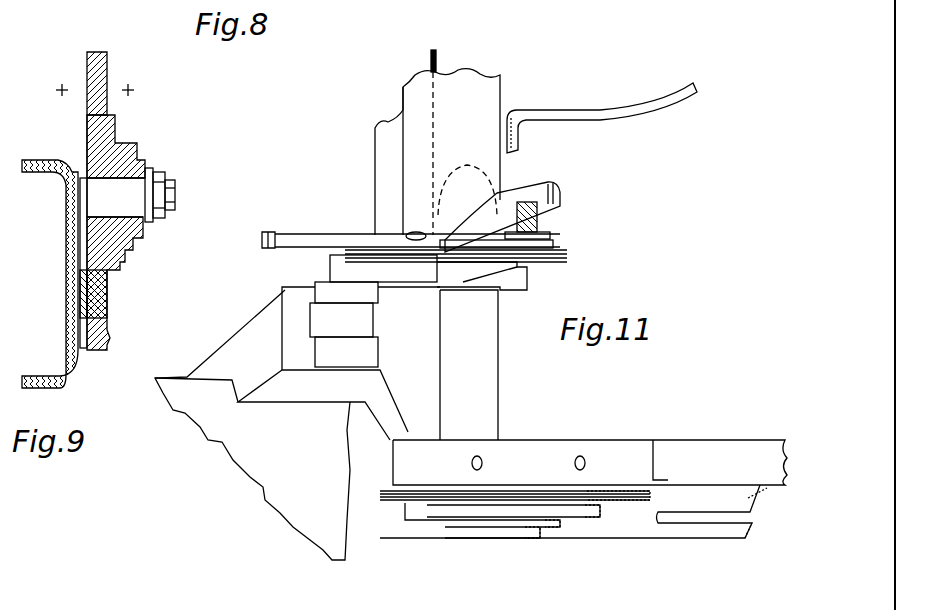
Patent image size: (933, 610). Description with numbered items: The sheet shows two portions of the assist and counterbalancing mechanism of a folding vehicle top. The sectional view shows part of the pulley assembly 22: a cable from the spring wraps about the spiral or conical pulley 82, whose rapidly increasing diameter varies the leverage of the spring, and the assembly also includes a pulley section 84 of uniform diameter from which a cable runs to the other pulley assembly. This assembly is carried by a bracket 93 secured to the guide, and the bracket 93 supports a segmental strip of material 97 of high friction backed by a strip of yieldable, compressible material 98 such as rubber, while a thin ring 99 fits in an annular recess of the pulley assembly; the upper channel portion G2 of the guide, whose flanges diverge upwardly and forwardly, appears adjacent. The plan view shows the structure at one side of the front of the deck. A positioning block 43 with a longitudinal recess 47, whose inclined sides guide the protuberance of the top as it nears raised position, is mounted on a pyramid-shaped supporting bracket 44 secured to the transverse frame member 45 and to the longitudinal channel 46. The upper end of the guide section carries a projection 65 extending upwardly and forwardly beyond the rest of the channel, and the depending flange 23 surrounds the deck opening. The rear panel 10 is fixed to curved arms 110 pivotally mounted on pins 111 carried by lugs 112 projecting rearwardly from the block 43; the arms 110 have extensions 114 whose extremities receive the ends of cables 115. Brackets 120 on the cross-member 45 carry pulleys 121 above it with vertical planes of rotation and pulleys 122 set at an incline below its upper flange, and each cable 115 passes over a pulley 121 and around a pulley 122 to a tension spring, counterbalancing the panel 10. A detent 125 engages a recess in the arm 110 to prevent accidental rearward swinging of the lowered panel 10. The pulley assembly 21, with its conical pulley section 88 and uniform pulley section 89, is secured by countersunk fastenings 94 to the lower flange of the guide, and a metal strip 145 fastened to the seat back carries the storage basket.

In FIG. 9, the rear panel 10 is at (56, 94).
In FIG. 9, the pulley assembly 22 is at (128, 152).
In FIG. 9, the spiral or conical pulley 82 is at (125, 258).
In FIG. 9, the pulley section 84 is at (87, 53).
In FIG. 9, the bracket 93 is at (85, 345).
In FIG. 9, the segmental strip of material 97 is at (95, 292).
In FIG. 9, the strip of yieldable, compressible material 98 is at (80, 287).
In FIG. 9, the thin ring 99 is at (87, 118).
In FIG. 9, the upper channel portion G2 is at (47, 395).
In FIG. 11, the upper channel portion G2 is at (676, 445).
In FIG. 11, the pulley assembly 21 is at (612, 512).
In FIG. 11, the depending flange 23 is at (367, 404).
In FIG. 11, the positioning block 43 is at (290, 290).
In FIG. 11, the supporting bracket 44 is at (246, 343).
In FIG. 11, the transverse frame member 45 is at (490, 90).
In FIG. 11, the longitudinal channel 46 is at (668, 540).
In FIG. 11, the longitudinal recess 47 is at (373, 320).
In FIG. 11, the projection 65 is at (395, 453).
In FIG. 11, the conical pulley section 88 is at (450, 527).
In FIG. 11, the pulley section 89 is at (640, 502).
In FIG. 11, the countersunk fastenings 94 is at (578, 458).
In FIG. 11, the curved arms 110 is at (540, 190).
In FIG. 11, the pins 111 is at (408, 236).
In FIG. 11, the lugs 112 is at (428, 272).
In FIG. 11, the extensions 114 is at (330, 224).
In FIG. 11, the cables 115 is at (437, 52).
In FIG. 11, the brackets 120 is at (469, 365).
In FIG. 11, the pulleys 121 is at (560, 258).
In FIG. 11, the pulleys 122 is at (455, 162).
In FIG. 11, the detent 125 is at (545, 222).
In FIG. 11, the metal strip 145 is at (567, 110).